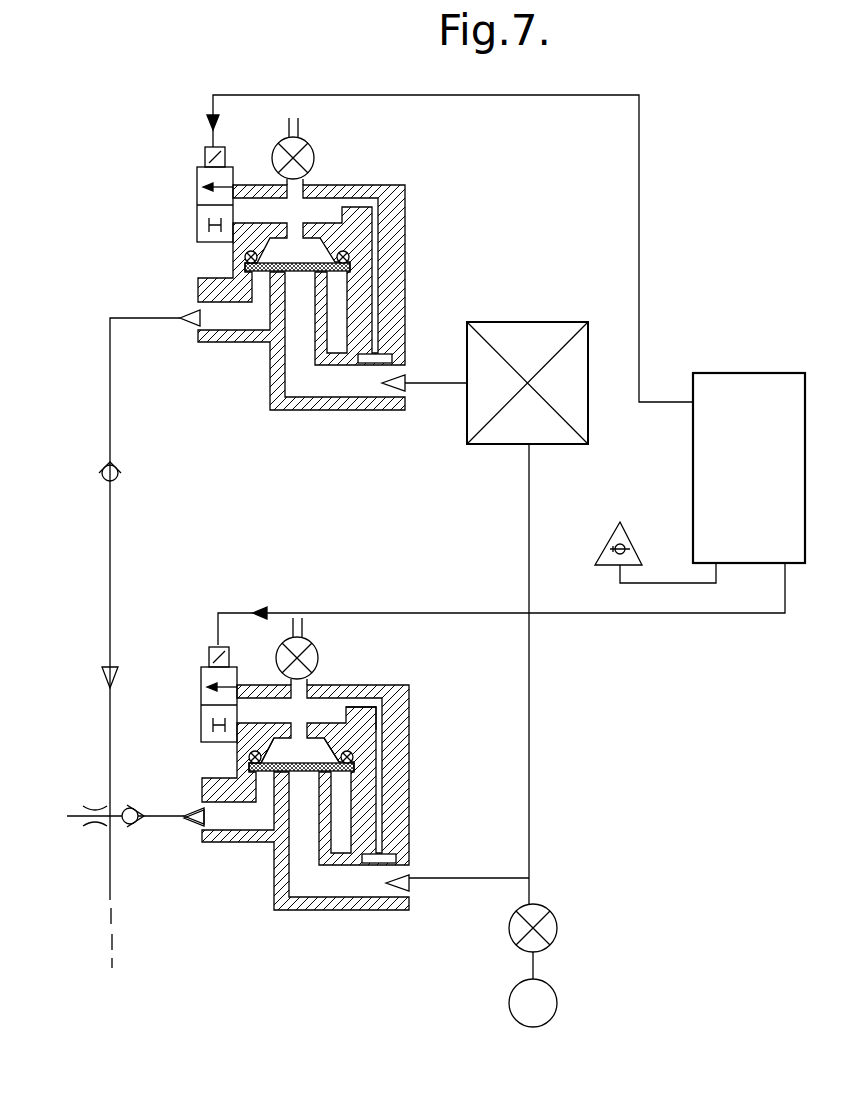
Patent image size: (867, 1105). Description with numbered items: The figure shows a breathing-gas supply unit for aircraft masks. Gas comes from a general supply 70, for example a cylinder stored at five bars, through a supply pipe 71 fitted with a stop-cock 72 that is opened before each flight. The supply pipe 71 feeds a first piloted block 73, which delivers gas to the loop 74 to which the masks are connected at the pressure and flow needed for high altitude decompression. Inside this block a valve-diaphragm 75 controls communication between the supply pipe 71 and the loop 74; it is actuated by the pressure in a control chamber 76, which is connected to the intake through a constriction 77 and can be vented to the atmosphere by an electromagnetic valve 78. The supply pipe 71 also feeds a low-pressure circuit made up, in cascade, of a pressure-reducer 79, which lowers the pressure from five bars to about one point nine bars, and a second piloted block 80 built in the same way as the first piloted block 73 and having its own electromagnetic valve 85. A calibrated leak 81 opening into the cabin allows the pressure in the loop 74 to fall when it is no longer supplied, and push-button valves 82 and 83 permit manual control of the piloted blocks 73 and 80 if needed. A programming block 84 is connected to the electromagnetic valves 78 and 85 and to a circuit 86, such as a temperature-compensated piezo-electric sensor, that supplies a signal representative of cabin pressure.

The general supply 70 is at (509, 1003).
The supply pipe 71 is at (531, 740).
The stop-cock 72 is at (550, 912).
The first piloted block 73 is at (323, 770).
The loop 74 is at (111, 557).
The valve-diaphragm 75 is at (305, 836).
The control chamber 76 is at (355, 739).
The constriction 77 is at (378, 686).
The electromagnetic valve 78 is at (192, 701).
The pressure-reducer 79 is at (467, 420).
The piloted block 80 is at (405, 212).
The calibrated leak 81 is at (95, 808).
The push-button valve 82 is at (323, 648).
The push-button valve 83 is at (313, 150).
The programming block 84 is at (693, 450).
The electromagnetic valve 85 is at (197, 212).
The circuit 86 is at (612, 538).